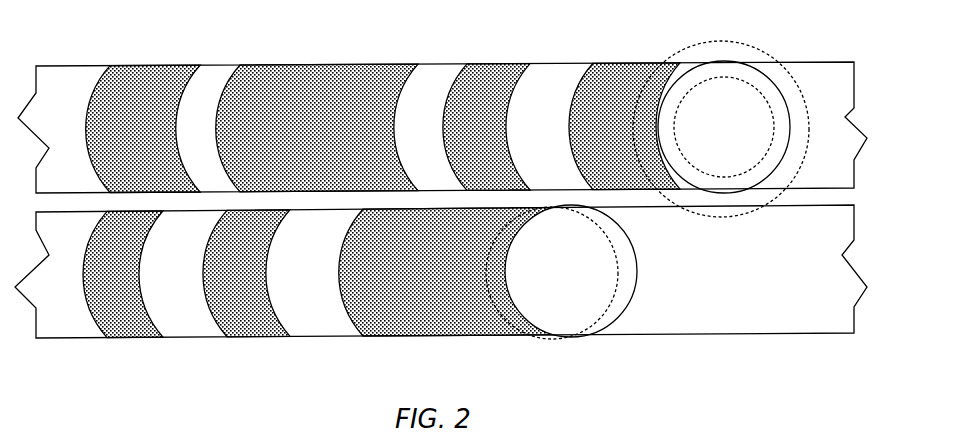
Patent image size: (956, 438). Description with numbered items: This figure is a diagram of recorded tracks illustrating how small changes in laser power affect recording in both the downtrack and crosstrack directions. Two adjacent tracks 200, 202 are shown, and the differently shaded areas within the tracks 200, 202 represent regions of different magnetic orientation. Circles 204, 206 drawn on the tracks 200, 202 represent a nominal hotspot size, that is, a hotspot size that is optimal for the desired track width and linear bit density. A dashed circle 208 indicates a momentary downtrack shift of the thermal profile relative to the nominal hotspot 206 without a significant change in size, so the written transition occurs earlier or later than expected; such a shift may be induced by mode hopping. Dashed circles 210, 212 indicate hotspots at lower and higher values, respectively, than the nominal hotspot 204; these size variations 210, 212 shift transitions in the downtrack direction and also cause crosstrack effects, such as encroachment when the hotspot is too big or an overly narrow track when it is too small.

The track 200 is at (80, 65).
The track 202 is at (70, 340).
The circle 204 is at (725, 62).
The circle 206 is at (598, 338).
The dashed circle 208 is at (510, 323).
The dashed circle 210 is at (737, 78).
The dashed circle 212 is at (678, 50).